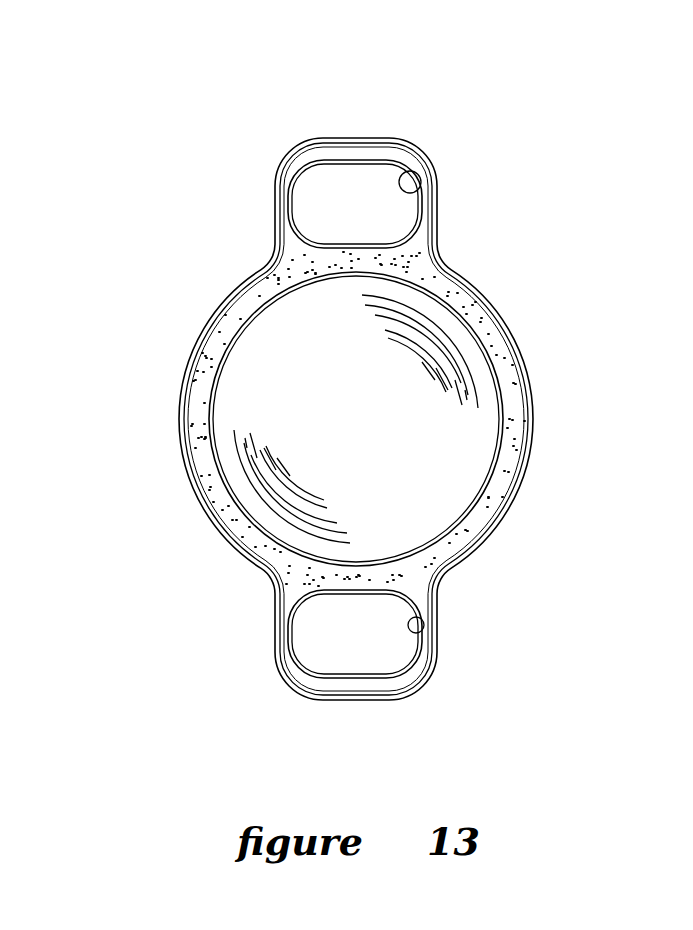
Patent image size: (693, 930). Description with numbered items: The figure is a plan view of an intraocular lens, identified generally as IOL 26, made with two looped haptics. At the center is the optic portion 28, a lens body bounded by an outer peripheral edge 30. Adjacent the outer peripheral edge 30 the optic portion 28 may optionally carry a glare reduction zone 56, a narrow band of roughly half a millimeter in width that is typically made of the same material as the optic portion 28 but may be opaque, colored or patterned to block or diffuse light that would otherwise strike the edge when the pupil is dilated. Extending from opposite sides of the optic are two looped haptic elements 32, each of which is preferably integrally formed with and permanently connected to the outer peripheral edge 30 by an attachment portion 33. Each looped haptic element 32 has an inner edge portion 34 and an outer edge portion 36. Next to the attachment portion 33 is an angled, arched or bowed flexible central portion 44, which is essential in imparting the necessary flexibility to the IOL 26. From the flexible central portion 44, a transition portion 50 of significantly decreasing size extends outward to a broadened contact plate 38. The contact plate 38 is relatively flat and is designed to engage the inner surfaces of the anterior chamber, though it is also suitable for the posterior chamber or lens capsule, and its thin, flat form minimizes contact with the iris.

The IOL 26 is at (539, 329).
The optic portion 28 is at (377, 434).
The outer peripheral edge 30 is at (532, 418).
The looped haptic element 32 is at (435, 220).
The attachment portion 33 is at (277, 252).
The inner edge portion 34 is at (410, 183).
The outer edge portion 36 is at (275, 182).
The contact plate 38 is at (357, 153).
The flexible central portion 44 is at (277, 202).
The transition portion 50 is at (284, 160).
The glare reduction zone 56 is at (178, 420).